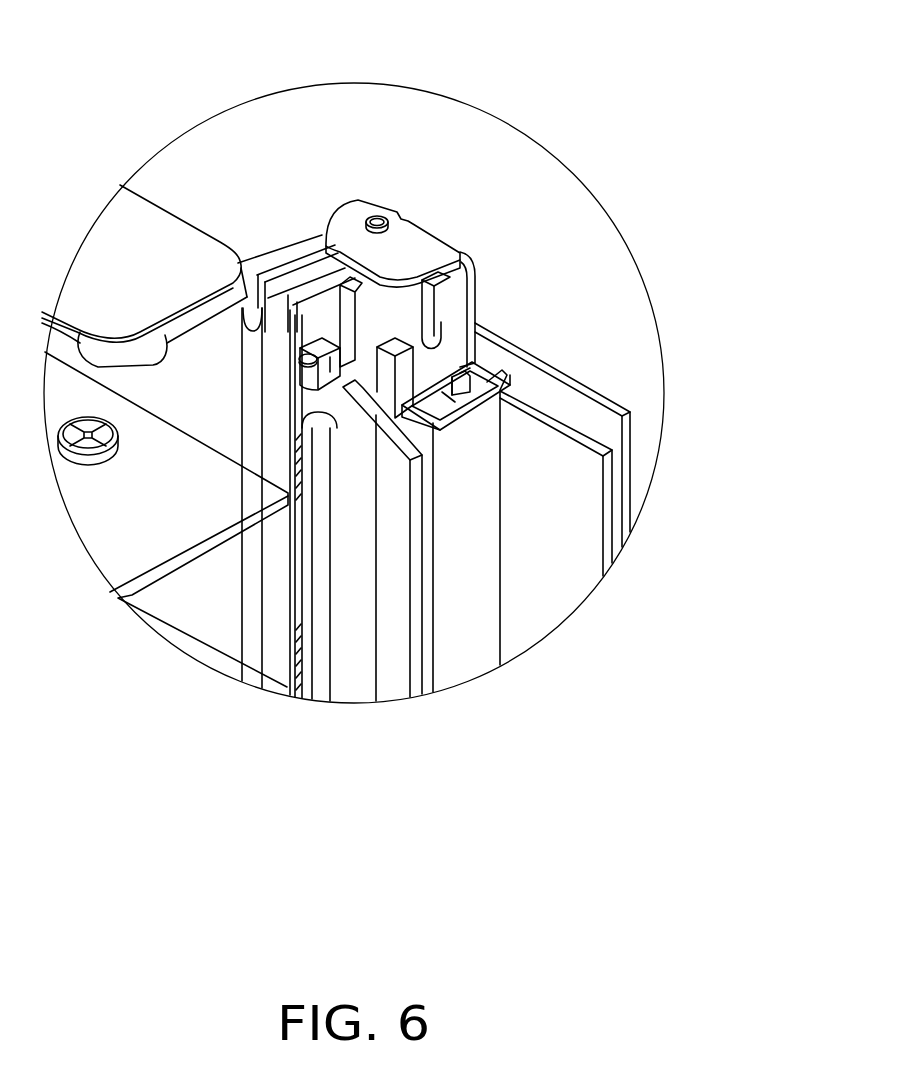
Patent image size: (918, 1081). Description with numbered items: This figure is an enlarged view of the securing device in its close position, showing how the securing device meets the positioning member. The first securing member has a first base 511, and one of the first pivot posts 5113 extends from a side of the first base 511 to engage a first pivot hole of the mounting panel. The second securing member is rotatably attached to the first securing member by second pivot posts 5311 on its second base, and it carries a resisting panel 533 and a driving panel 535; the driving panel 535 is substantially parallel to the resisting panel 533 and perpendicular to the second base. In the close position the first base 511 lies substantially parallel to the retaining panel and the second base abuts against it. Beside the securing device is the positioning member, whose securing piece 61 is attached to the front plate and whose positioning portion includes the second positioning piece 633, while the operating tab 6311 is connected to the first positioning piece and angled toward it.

The first base 511 is at (317, 307).
The first pivot post 5113 is at (372, 215).
The second pivot post 5311 is at (305, 360).
The resisting panel 533 is at (388, 377).
The second positioning piece 633 is at (422, 390).
The operating tab 6311 is at (455, 390).
The securing piece 61 is at (547, 560).
The driving panel 535 is at (380, 607).